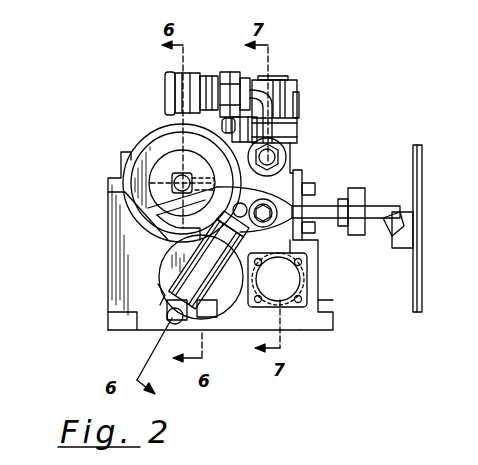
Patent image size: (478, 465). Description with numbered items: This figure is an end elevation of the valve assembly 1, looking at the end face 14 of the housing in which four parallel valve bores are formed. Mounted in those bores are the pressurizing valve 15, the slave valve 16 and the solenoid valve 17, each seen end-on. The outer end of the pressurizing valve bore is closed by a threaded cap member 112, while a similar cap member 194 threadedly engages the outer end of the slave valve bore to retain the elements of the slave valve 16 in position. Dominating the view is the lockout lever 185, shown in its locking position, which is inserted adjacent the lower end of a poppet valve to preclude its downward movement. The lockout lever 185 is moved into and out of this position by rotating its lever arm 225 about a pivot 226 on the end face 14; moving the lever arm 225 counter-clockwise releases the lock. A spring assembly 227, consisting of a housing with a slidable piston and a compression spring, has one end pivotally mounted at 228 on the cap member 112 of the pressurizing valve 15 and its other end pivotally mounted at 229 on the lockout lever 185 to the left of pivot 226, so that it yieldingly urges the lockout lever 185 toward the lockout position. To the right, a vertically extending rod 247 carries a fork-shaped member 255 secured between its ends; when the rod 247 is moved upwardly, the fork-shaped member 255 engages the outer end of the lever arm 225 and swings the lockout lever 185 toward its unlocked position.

The valve assembly 1 is at (100, 164).
The end face 14 is at (132, 222).
The pressurizing valve 15 is at (152, 290).
The slave valve 16 is at (150, 150).
The solenoid valve 17 is at (315, 298).
The cap member 112 is at (167, 263).
The lockout lever 185 is at (184, 130).
The cap member 194 is at (146, 186).
The lever arm 225 is at (342, 228).
The pivot 226 is at (275, 200).
The spring assembly 227 is at (215, 302).
The pivotal mounting 228 is at (167, 320).
The pivotal mounting 229 is at (165, 260).
The rod 247 is at (423, 290).
The fork-shaped member 255 is at (400, 212).